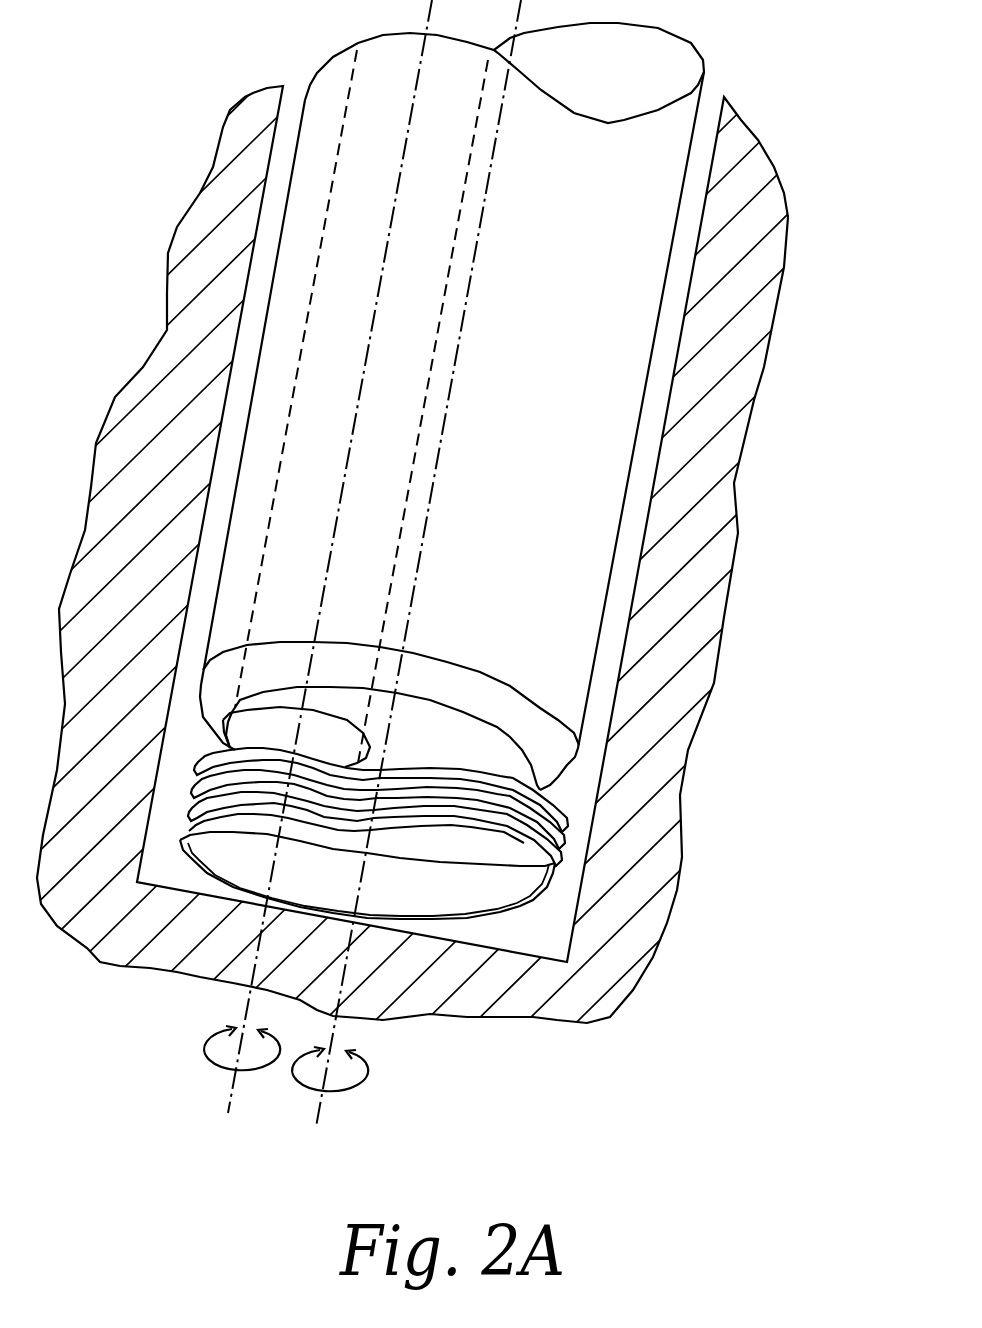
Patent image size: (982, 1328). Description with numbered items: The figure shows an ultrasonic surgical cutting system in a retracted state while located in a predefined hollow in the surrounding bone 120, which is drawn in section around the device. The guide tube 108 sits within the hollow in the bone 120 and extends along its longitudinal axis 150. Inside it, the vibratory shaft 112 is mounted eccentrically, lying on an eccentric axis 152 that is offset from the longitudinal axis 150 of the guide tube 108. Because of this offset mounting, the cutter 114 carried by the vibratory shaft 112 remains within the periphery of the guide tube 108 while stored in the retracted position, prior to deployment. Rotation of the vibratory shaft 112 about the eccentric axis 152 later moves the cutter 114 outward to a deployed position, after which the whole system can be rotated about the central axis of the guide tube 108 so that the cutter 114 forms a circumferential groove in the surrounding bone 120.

The guide tube 108 is at (643, 397).
The vibratory shaft 112 is at (447, 306).
The cutter 114 is at (552, 867).
The surrounding bone 120 is at (684, 493).
The longitudinal axis 150 is at (323, 1102).
The eccentric axis 152 is at (230, 1093).